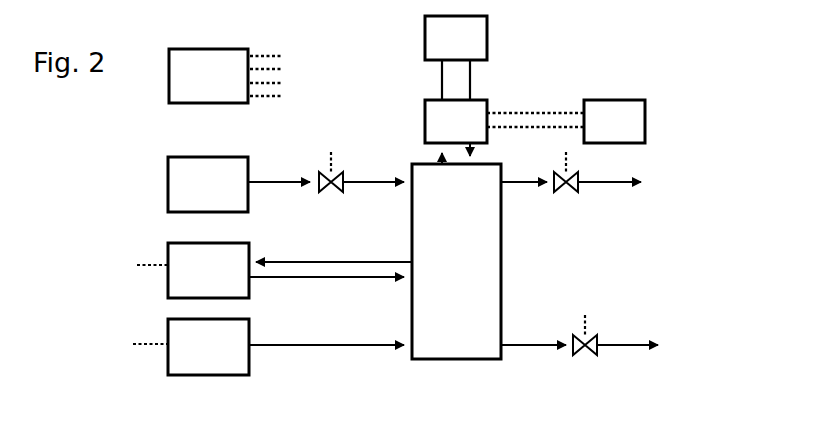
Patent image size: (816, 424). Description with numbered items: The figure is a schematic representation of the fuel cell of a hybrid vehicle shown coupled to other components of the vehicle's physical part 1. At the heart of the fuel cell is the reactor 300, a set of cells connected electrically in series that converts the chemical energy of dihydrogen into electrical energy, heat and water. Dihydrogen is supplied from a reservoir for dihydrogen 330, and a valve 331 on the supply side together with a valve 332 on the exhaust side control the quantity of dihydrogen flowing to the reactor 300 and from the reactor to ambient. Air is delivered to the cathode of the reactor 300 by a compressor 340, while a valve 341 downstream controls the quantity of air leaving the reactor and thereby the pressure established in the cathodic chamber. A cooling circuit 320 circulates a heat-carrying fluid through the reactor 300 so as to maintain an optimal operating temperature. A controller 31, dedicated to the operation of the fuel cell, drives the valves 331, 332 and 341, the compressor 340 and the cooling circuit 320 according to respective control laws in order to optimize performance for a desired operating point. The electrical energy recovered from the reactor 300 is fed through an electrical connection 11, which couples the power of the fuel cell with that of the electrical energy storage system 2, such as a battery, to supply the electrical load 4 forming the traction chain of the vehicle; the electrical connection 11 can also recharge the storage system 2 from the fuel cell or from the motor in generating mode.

The physical part 1 is at (712, 292).
The electrical energy storage system 2 is at (607, 133).
The electrical load 4 is at (449, 49).
The electrical connection 11 is at (444, 133).
The controller 31 is at (195, 85).
The reactor 300 is at (477, 221).
The cooling circuit 320 is at (188, 279).
The reservoir for dihydrogen 330 is at (188, 194).
The valve 331 is at (346, 185).
The valve 332 is at (581, 185).
The compressor 340 is at (188, 356).
The valve 341 is at (609, 348).